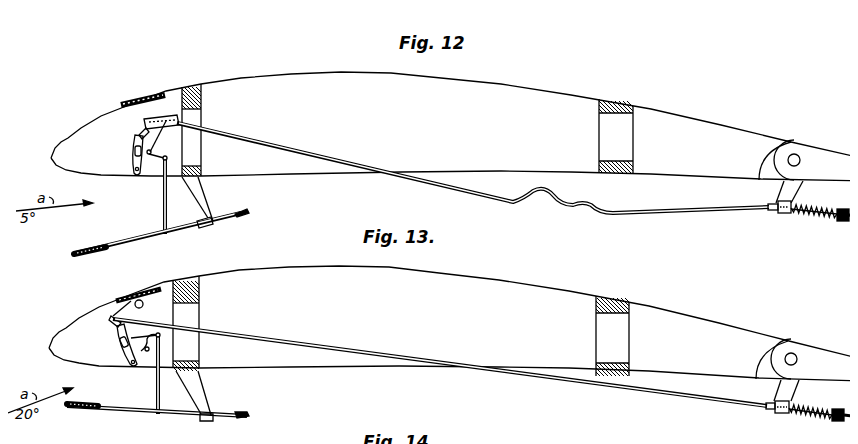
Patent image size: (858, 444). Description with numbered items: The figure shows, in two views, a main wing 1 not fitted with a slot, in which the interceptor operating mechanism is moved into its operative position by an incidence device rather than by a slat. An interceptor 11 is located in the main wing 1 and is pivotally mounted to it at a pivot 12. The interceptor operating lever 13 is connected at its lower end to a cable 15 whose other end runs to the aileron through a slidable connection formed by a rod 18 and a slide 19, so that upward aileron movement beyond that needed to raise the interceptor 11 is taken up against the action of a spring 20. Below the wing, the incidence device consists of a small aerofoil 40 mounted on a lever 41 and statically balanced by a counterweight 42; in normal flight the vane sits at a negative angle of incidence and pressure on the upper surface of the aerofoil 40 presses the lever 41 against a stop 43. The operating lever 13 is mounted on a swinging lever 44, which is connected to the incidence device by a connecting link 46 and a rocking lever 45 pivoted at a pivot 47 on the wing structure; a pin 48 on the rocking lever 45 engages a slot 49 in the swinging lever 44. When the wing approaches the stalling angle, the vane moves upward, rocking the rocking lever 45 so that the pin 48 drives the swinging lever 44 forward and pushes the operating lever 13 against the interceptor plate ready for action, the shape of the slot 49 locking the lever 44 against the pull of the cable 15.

In FIG. 12, the main wing 1 is at (300, 73).
In FIG. 13, the main wing 1 is at (520, 281).
In FIG. 12, the interceptor 11 is at (165, 93).
In FIG. 13, the interceptor 11 is at (160, 287).
In FIG. 12, the pivot 12 is at (122, 104).
In FIG. 13, the pivot 12 is at (114, 300).
In FIG. 12, the interceptor operating lever 13 is at (170, 117).
In FIG. 13, the interceptor operating lever 13 is at (142, 305).
In FIG. 12, the cable 15 is at (470, 193).
In FIG. 13, the cable 15 is at (630, 386).
In FIG. 12, the rod 18 is at (853, 223).
In FIG. 13, the rod 18 is at (845, 418).
In FIG. 12, the slide 19 is at (786, 214).
In FIG. 13, the slide 19 is at (781, 414).
In FIG. 12, the spring 20 is at (815, 220).
In FIG. 13, the spring 20 is at (815, 416).
In FIG. 12, the small aerofoil 40 is at (103, 247).
In FIG. 13, the small aerofoil 40 is at (92, 403).
In FIG. 12, the lever 41 is at (140, 236).
In FIG. 13, the lever 41 is at (108, 410).
In FIG. 12, the counterweight 42 is at (247, 210).
In FIG. 13, the counterweight 42 is at (247, 413).
In FIG. 12, the stop 43 is at (200, 228).
In FIG. 13, the stop 43 is at (200, 418).
In FIG. 12, the swinging lever 44 is at (143, 125).
In FIG. 13, the swinging lever 44 is at (109, 319).
In FIG. 12, the rocking lever 45 is at (157, 159).
In FIG. 13, the rocking lever 45 is at (147, 347).
In FIG. 12, the connecting link 46 is at (166, 217).
In FIG. 13, the connecting link 46 is at (156, 385).
In FIG. 12, the pivot 47 is at (151, 149).
In FIG. 13, the pivot 47 is at (146, 350).
In FIG. 12, the pin 48 is at (133, 137).
In FIG. 13, the pin 48 is at (125, 350).
In FIG. 12, the slot 49 is at (134, 150).
In FIG. 13, the slot 49 is at (119, 340).